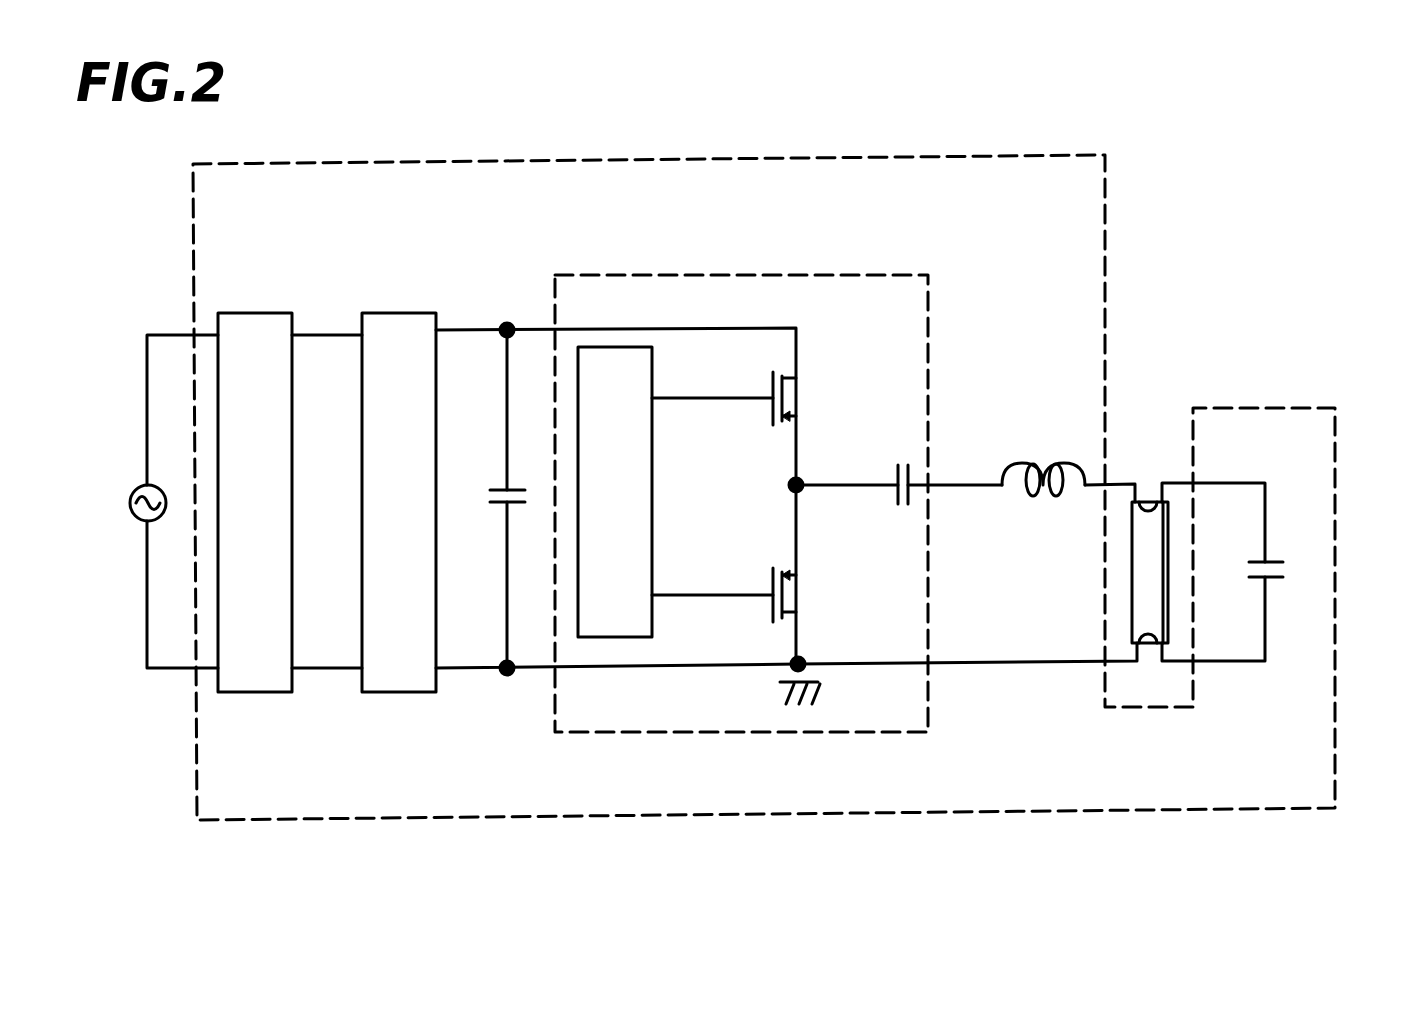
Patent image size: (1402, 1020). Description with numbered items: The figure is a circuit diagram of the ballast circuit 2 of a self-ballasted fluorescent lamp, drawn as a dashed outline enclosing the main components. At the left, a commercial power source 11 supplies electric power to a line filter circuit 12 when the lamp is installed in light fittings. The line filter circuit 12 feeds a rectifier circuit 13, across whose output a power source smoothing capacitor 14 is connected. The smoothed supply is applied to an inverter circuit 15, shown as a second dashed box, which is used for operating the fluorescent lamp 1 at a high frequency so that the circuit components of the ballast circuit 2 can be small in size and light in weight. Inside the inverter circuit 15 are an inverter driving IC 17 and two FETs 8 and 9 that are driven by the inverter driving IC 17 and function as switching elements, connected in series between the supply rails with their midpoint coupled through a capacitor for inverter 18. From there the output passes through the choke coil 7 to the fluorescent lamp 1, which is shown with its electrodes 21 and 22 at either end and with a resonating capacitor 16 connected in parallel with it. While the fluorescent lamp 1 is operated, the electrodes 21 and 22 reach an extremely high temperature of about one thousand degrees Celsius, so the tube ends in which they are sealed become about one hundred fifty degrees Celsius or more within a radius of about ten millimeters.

The fluorescent lamp 1 is at (1165, 505).
The ballast circuit 2 is at (600, 157).
The choke coil 7 is at (1047, 462).
The FET 8 is at (793, 388).
The FET 9 is at (800, 582).
The commercial power source 11 is at (140, 487).
The line filter circuit 12 is at (250, 313).
The rectifier circuit 13 is at (395, 313).
The power source smoothing capacitor 14 is at (492, 497).
The inverter circuit 15 is at (800, 275).
The resonating capacitor 16 is at (1283, 565).
The inverter driving IC 17 is at (614, 347).
The capacitor for inverter 18 is at (900, 465).
The electrode 21 is at (1142, 510).
The electrode 22 is at (1142, 638).